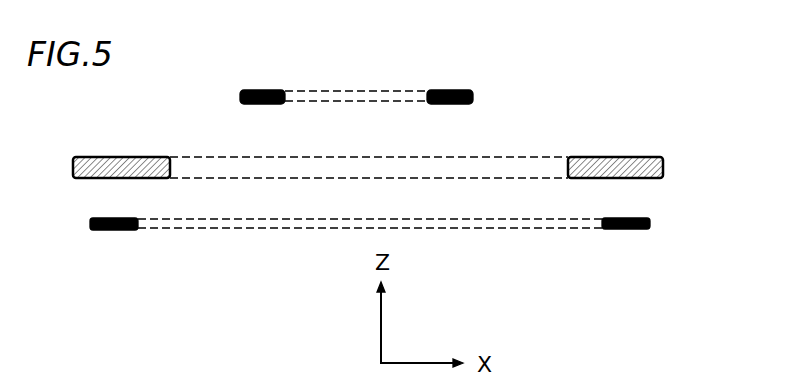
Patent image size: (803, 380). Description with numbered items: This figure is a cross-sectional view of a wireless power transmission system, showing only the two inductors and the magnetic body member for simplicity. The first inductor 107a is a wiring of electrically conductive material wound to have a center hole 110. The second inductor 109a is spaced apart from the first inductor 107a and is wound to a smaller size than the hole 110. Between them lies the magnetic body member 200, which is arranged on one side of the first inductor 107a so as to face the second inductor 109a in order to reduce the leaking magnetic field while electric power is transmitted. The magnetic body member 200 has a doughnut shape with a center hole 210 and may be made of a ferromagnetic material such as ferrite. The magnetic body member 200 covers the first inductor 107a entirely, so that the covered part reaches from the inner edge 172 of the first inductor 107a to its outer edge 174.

The second inductor 109a is at (469, 91).
The magnetic body member 200 is at (615, 156).
The center hole 210 is at (171, 158).
The first inductor 107a is at (633, 217).
The center hole 110 is at (140, 226).
The inner edge 172 is at (138, 231).
The outer edge 174 is at (92, 231).